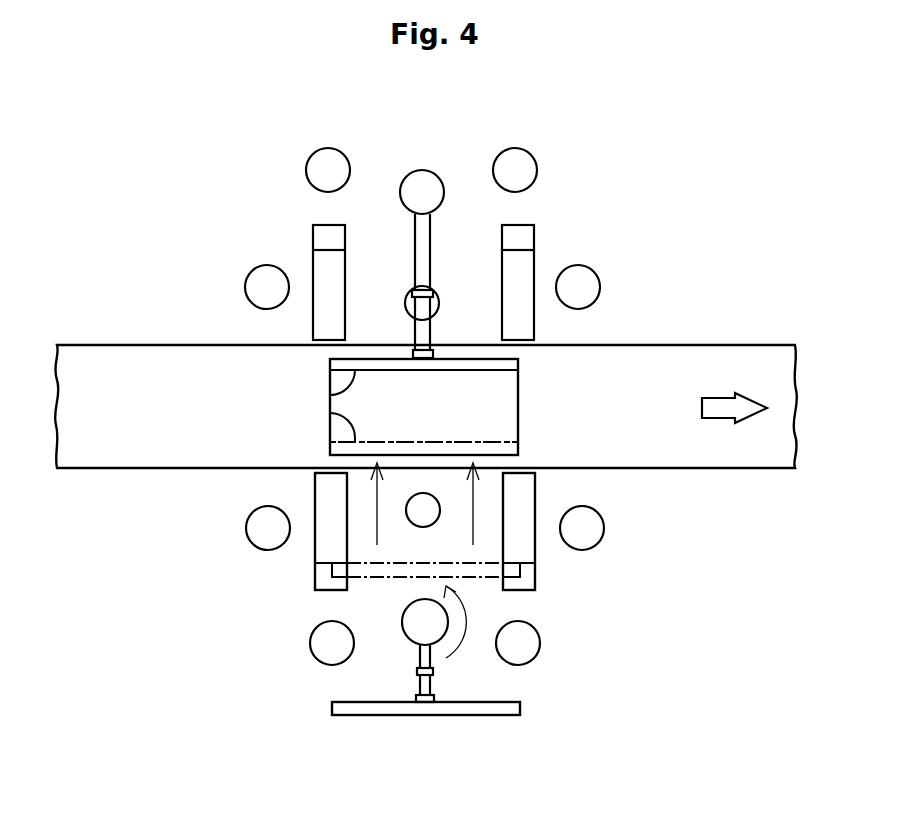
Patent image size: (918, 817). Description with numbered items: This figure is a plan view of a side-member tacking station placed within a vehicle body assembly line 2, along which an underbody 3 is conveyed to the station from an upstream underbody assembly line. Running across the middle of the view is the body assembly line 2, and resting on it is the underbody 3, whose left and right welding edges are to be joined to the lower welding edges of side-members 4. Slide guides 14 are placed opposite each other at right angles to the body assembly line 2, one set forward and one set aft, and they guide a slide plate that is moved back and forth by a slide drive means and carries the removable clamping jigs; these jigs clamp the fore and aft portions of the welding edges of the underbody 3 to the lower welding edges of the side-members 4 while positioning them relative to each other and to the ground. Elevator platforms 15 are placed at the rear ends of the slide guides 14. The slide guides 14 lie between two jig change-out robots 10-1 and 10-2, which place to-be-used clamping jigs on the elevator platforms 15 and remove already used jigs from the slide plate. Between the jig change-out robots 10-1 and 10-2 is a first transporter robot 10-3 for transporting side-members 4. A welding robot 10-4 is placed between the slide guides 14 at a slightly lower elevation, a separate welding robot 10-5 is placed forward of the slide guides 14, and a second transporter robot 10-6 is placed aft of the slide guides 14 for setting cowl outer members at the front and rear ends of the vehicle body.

The vehicle body assembly line 2 is at (108, 343).
The underbody 3 is at (508, 405).
The side-member 4 is at (330, 396).
The slide guide 14 is at (315, 483).
The elevator platform 15 is at (318, 578).
The jig change-out robot 10-1 is at (310, 642).
The jig change-out robot 10-2 is at (541, 641).
The first transporter robot 10-3 is at (405, 633).
The welding robot 10-4 is at (408, 513).
The welding robot 10-5 is at (604, 527).
The second transporter robot 10-6 is at (246, 528).